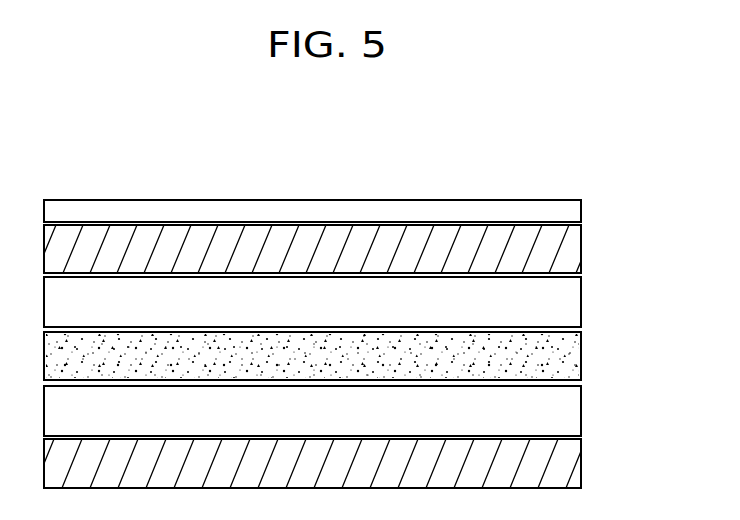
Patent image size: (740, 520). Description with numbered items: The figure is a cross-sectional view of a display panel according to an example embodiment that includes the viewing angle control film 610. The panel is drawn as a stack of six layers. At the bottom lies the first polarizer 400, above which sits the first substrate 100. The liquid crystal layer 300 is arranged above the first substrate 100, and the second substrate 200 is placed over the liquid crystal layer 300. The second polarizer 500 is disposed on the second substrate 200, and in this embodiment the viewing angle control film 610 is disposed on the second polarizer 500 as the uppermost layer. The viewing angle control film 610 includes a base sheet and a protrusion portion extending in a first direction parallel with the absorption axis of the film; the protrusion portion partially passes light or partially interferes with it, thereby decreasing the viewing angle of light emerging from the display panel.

The viewing angle control film 610 is at (574, 212).
The second polarizer 500 is at (574, 250).
The second substrate 200 is at (574, 303).
The liquid crystal layer 300 is at (574, 357).
The first substrate 100 is at (574, 410).
The first polarizer 400 is at (574, 465).